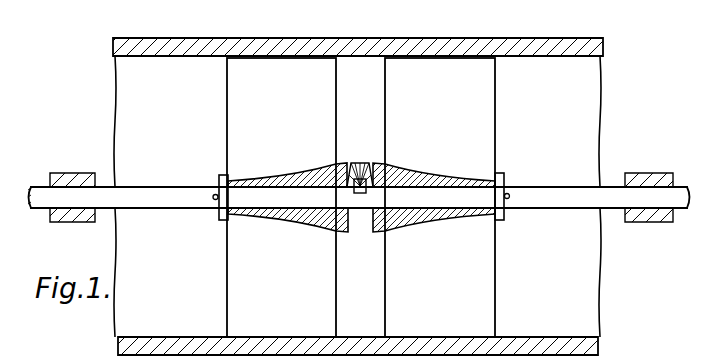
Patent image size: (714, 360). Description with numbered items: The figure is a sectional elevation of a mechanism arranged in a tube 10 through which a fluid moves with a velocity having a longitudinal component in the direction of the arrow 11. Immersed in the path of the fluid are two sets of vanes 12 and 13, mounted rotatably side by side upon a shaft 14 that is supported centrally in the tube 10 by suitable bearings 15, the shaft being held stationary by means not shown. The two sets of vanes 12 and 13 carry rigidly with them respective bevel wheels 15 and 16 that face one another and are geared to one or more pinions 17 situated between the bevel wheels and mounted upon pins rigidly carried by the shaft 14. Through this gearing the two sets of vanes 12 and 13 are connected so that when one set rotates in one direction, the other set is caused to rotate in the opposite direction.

The tube 10 is at (603, 59).
The arrow 11 is at (139, 108).
The first set of vanes 12 is at (292, 114).
The second set of vanes 13 is at (447, 116).
The shaft 14 is at (269, 200).
The bearings / bevel wheel 15 is at (84, 173).
The bevel wheel 16 is at (387, 173).
The pinion 17 is at (362, 163).